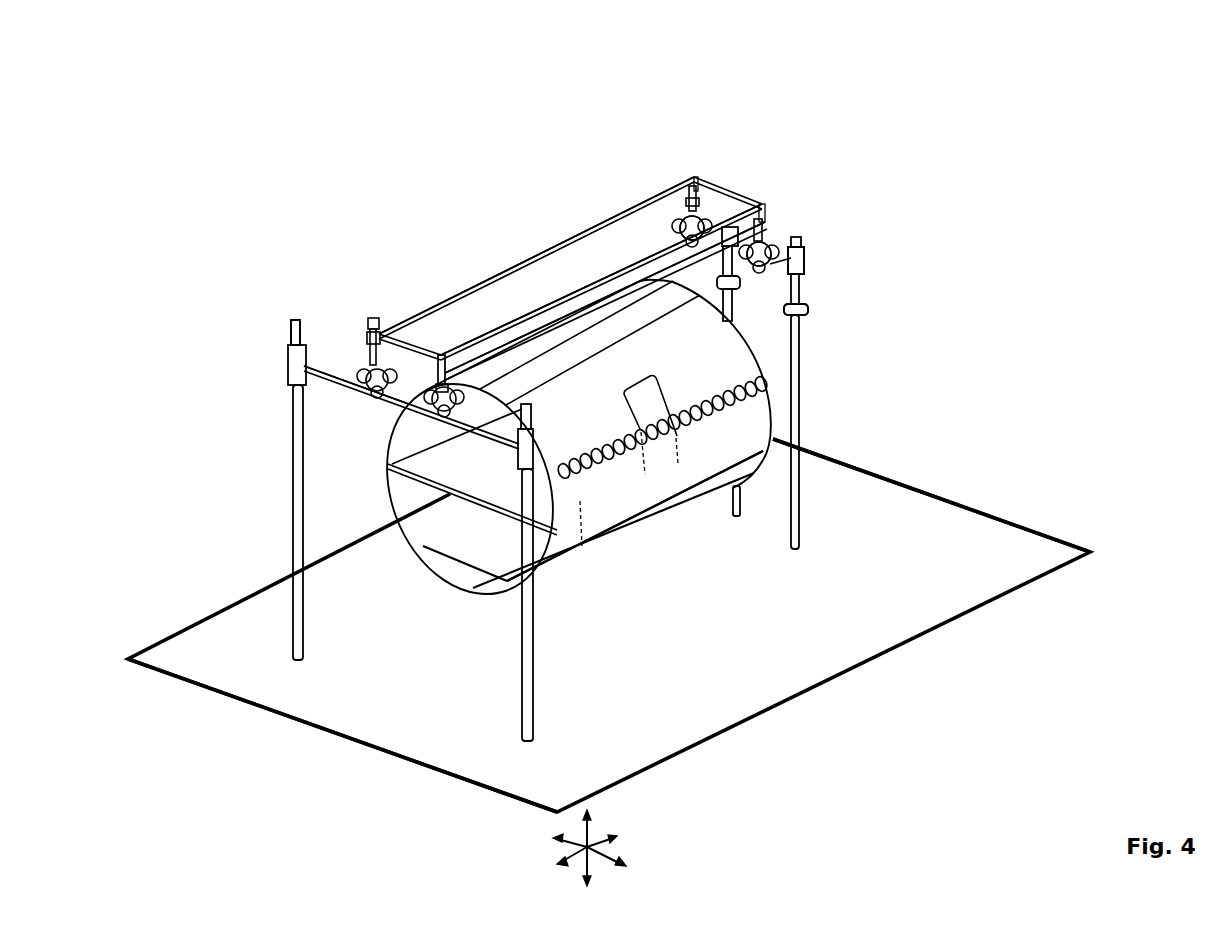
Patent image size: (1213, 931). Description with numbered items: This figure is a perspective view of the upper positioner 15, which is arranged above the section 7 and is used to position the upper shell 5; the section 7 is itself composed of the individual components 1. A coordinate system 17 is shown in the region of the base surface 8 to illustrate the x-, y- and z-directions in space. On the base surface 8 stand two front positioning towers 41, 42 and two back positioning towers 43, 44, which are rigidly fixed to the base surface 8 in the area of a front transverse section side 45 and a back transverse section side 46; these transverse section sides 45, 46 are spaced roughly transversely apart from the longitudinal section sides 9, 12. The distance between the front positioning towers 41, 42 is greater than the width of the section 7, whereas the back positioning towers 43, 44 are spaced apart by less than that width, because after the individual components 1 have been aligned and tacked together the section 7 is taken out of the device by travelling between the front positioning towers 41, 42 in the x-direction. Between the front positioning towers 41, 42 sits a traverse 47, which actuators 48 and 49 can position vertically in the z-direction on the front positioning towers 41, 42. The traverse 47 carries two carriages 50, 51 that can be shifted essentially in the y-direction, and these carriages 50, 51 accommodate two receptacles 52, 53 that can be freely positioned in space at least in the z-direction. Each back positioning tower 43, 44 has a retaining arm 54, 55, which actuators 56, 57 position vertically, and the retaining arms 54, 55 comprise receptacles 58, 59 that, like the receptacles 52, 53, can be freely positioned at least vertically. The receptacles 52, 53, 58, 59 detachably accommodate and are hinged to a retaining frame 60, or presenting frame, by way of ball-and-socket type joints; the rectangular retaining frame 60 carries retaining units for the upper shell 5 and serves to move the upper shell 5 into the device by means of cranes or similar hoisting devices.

The individual components 1 is at (484, 158).
The section 7 is at (484, 158).
The upper shell 5 is at (537, 350).
The base surface 8 is at (921, 520).
The longitudinal section side 9 is at (393, 555).
The longitudinal section side 12 is at (653, 543).
The upper positioner 15 is at (553, 196).
The coordinate system 17 is at (589, 831).
The front positioning tower 41 is at (286, 320).
The front positioning tower 42 is at (512, 398).
The back positioning tower 43 is at (722, 218).
The back positioning tower 44 is at (788, 229).
The front transverse section side 45 is at (380, 665).
The back transverse section side 46 is at (838, 408).
The traverse 47 is at (342, 378).
The actuator 48 is at (280, 362).
The actuator 49 is at (386, 505).
The carriage 50 is at (330, 358).
The carriage 51 is at (388, 493).
The receptacle 52 is at (355, 364).
The receptacle 53 is at (412, 381).
The retaining arm 54 is at (652, 228).
The retaining arm 55 is at (799, 293).
The actuator 56 is at (753, 216).
The actuator 57 is at (796, 250).
The receptacle 58 is at (676, 205).
The receptacle 59 is at (760, 230).
The retaining frame 60 is at (600, 210).